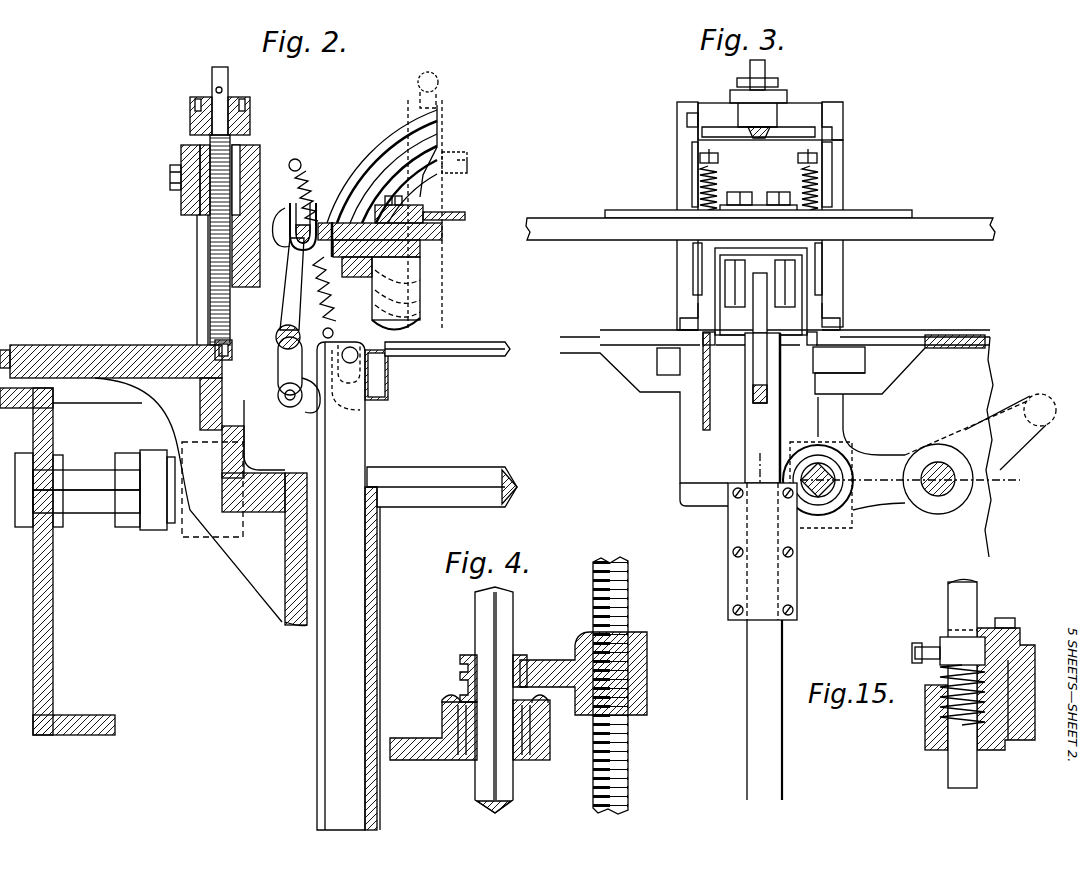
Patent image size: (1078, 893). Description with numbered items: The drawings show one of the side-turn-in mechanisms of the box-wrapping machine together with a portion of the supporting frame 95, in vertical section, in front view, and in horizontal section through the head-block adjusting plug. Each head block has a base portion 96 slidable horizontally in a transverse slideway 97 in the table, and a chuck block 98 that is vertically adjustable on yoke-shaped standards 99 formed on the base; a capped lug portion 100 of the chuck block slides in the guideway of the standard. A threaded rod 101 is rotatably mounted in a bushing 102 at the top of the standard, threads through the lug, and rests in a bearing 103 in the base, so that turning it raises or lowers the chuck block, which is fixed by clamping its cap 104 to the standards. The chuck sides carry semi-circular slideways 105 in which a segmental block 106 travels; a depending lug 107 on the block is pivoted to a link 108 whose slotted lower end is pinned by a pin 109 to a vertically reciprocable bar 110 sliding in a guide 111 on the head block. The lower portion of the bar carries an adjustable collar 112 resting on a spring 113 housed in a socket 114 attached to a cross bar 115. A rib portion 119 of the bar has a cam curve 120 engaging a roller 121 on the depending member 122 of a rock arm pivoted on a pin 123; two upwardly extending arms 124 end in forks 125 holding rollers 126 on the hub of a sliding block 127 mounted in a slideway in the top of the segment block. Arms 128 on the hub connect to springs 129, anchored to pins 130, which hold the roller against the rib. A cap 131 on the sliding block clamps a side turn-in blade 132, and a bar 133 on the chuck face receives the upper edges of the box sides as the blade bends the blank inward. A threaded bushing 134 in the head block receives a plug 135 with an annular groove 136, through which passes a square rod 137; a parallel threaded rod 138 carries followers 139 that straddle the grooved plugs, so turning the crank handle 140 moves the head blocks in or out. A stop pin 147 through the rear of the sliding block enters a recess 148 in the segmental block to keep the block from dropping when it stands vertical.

In FIG. 2, the frame casing 95 is at (153, 556).
In FIG. 3, the frame casing 95 is at (680, 420).
In FIG. 2, the base portion 96 is at (67, 345).
In FIG. 2, the transverse slideway 97 is at (389, 375).
In FIG. 3, the transverse slideway 97 is at (865, 360).
In FIG. 2, the chuck block 98 is at (350, 142).
In FIG. 3, the chuck block 98 is at (843, 287).
In FIG. 2, the standards 99 is at (203, 252).
In FIG. 2, the capped lug portion 100 is at (205, 215).
In FIG. 2, the threaded rod 101 is at (212, 290).
In FIG. 2, the bushing 102 is at (212, 95).
In FIG. 2, the bearing 103 is at (218, 343).
In FIG. 2, the cap 104 is at (181, 150).
In FIG. 2, the semi-circular slideway 105 is at (440, 125).
In FIG. 3, the semi-circular slideway 105 is at (834, 120).
In FIG. 2, the segmental block 106 is at (421, 288).
In FIG. 3, the segmental block 106 is at (693, 262).
In FIG. 2, the depending lug 107 is at (421, 262).
In FIG. 3, the depending lug 107 is at (808, 268).
In FIG. 2, the link 108 is at (421, 310).
In FIG. 3, the link 108 is at (725, 292).
In FIG. 2, the pin 109 is at (358, 357).
In FIG. 2, the vertically reciprocable bar 110 is at (343, 438).
In FIG. 3, the vertically reciprocable bar 110 is at (760, 745).
In FIG. 15, the vertically reciprocable bar 110 is at (948, 598).
In FIG. 2, the guide 111 is at (290, 625).
In FIG. 3, the guide 111 is at (797, 578).
In FIG. 15, the adjustable collar 112 is at (940, 640).
In FIG. 15, the spring 113 is at (940, 707).
In FIG. 15, the socket 114 is at (925, 745).
In FIG. 15, the cross bar 115 is at (1012, 740).
In FIG. 2, the rib portion 119 is at (313, 455).
In FIG. 2, the cam curve 120 is at (306, 410).
In FIG. 2, the roller 121 is at (282, 406).
In FIG. 2, the depending member 122 is at (288, 370).
In FIG. 2, the pin 123 is at (289, 325).
In FIG. 2, the arms 124 is at (295, 284).
In FIG. 3, the arms 124 is at (680, 320).
In FIG. 2, the fork 125 is at (288, 214).
In FIG. 2, the rollers 126 is at (322, 256).
In FIG. 2, the sliding block 127 is at (381, 212).
In FIG. 2, the arms 128 is at (344, 333).
In FIG. 3, the arms 128 is at (760, 350).
In FIG. 2, the springs 129 is at (300, 172).
In FIG. 3, the springs 129 is at (802, 180).
In FIG. 2, the pins 130 is at (298, 159).
In FIG. 3, the pins 130 is at (798, 157).
In FIG. 2, the cap 131 is at (423, 205).
In FIG. 3, the cap 131 is at (740, 212).
In FIG. 2, the side turn in blade 132 is at (465, 215).
In FIG. 3, the side turn in blade 132 is at (868, 208).
In FIG. 2, the bar 133 is at (444, 232).
In FIG. 3, the bar 133 is at (590, 230).
In FIG. 3, the internally threaded bushing 134 is at (828, 508).
In FIG. 4, the internally threaded bushing 134 is at (443, 702).
In FIG. 3, the plug 135 is at (836, 491).
In FIG. 4, the plug 135 is at (470, 760).
In FIG. 2, the annular groove 136 is at (158, 500).
In FIG. 4, the annular groove 136 is at (460, 672).
In FIG. 2, the square rod 137 is at (433, 480).
In FIG. 3, the square rod 137 is at (826, 463).
In FIG. 4, the square rod 137 is at (503, 618).
In FIG. 3, the threaded rod 138 is at (935, 462).
In FIG. 4, the threaded rod 138 is at (628, 580).
In FIG. 2, the followers 139 is at (153, 528).
In FIG. 3, the followers 139 is at (878, 458).
In FIG. 4, the followers 139 is at (548, 660).
In FIG. 3, the crank handle 140 is at (1010, 408).
In FIG. 2, the stop pin 147 is at (376, 265).
In FIG. 2, the recess 148 is at (294, 250).